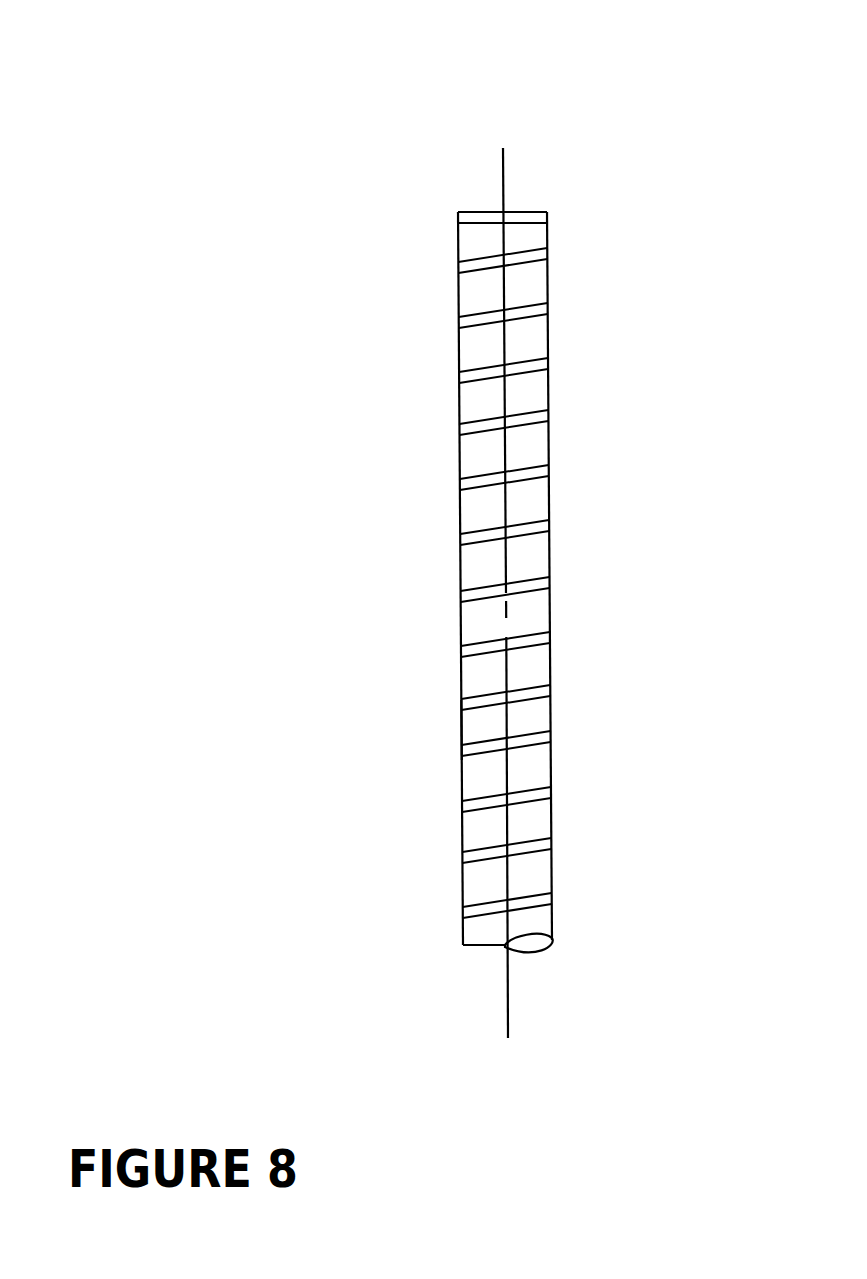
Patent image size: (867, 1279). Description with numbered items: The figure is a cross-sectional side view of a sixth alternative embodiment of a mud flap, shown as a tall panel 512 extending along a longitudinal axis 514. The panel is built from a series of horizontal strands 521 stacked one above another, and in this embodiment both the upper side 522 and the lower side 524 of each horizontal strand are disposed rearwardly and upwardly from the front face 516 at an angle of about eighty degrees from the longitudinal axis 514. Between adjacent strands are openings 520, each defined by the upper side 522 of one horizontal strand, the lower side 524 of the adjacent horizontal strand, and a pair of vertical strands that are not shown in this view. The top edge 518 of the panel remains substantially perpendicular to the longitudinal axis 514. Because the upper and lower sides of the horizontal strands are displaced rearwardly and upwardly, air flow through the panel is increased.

The coiled tubular assembly 512 is at (605, 407).
The longitudinal axis 514 is at (508, 168).
The front face 516 is at (460, 727).
The top edge 518 is at (462, 206).
The openings 520 is at (469, 349).
The horizontal strands 521 is at (472, 530).
The upper side 522 is at (536, 675).
The lower side 524 is at (531, 700).